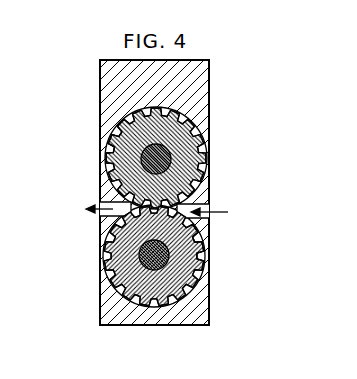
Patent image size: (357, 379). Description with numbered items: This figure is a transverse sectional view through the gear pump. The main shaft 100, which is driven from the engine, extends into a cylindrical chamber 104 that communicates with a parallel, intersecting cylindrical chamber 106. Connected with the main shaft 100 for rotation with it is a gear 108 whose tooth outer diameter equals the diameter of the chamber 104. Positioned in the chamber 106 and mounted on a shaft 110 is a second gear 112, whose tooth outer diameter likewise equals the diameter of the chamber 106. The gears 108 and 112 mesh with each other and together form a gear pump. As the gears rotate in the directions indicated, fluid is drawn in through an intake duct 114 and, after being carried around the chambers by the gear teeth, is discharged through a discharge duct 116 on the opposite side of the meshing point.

The main shaft 100 is at (165, 150).
The cylindrical chamber 104 is at (128, 122).
The cylindrical chamber 106 is at (190, 284).
The gear 108 is at (113, 168).
The shaft 110 is at (156, 270).
The gear 112 is at (183, 247).
The intake duct 114 is at (208, 200).
The discharge duct 116 is at (112, 210).